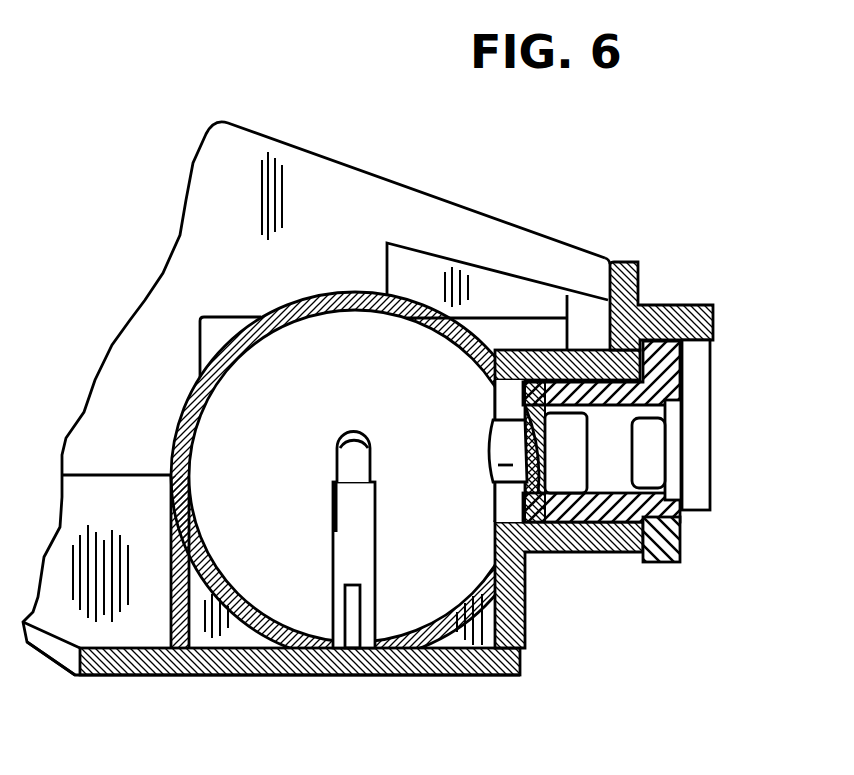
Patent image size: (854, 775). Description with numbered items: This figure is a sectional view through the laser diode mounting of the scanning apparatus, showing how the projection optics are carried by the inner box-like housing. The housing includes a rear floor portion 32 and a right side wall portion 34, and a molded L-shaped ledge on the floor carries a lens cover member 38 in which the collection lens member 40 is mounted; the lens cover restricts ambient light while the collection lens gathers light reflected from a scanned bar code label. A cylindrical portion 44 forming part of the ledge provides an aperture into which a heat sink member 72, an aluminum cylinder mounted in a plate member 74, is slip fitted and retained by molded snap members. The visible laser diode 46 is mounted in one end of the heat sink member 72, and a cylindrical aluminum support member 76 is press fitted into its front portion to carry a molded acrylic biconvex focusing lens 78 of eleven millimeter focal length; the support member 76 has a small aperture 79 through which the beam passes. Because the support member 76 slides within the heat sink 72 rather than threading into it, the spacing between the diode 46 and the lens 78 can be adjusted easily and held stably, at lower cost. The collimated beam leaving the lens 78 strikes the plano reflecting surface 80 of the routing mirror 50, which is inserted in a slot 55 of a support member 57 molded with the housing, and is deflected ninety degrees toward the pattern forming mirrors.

The rear floor portion 32 is at (304, 677).
The right side wall portion 34 is at (696, 305).
The lens cover member 38 is at (312, 293).
The collection lens member 40 is at (264, 618).
The cylindrical portion 44 is at (621, 552).
The visible laser diode 46 is at (650, 455).
The routing mirror 50 is at (340, 452).
The slot 55 is at (333, 503).
The support member 57 is at (375, 540).
The heat sink member 72 is at (622, 398).
The plate member 74 is at (683, 553).
The support member 76 is at (580, 453).
The focusing lens 78 is at (492, 443).
The aperture 79 is at (558, 520).
The plano reflecting surface 80 is at (357, 448).